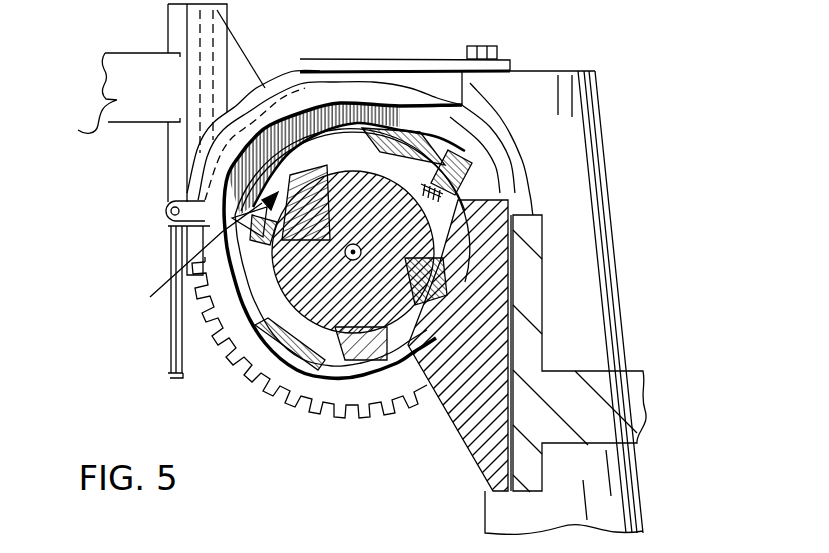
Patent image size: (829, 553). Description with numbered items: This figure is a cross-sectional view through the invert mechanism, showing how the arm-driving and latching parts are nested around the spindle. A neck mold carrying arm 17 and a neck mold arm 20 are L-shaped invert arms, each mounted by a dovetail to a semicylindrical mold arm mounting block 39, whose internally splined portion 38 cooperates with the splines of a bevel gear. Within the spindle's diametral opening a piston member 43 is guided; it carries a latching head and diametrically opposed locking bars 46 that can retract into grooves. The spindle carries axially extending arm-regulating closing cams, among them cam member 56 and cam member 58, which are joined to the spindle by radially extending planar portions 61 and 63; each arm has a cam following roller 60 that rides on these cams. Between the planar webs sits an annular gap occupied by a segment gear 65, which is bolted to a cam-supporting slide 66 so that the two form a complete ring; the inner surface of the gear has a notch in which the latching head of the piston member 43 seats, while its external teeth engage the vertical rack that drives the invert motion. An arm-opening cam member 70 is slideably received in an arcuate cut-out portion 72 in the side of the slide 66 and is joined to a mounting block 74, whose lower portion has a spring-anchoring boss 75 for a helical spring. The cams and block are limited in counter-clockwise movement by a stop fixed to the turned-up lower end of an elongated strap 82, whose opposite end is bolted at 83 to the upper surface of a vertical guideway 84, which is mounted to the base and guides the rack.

The neck mold carrying arm 17 is at (633, 410).
The neck mold arm 20 is at (110, 97).
The internally splined portion 38 is at (325, 330).
The mold arm mounting block 39 is at (454, 412).
The piston member 43 is at (191, 255).
The locking bar 46 is at (420, 293).
The cam member 56 is at (455, 145).
The cam member 58 is at (358, 380).
The cam following roller 60 is at (468, 173).
The planar portion 61 is at (345, 152).
The planar portion 63 is at (262, 388).
The segment gear 65 is at (270, 388).
The cam-supporting slide 66 is at (426, 118).
The arm-opening cam member 70 is at (280, 132).
The arcuate cut-out portion 72 is at (430, 145).
The mounting block 74 is at (293, 88).
The spring-anchoring boss 75 is at (169, 227).
The elongated strap 82 is at (170, 376).
The bolt 83 is at (481, 50).
The vertical guideway 84 is at (604, 248).